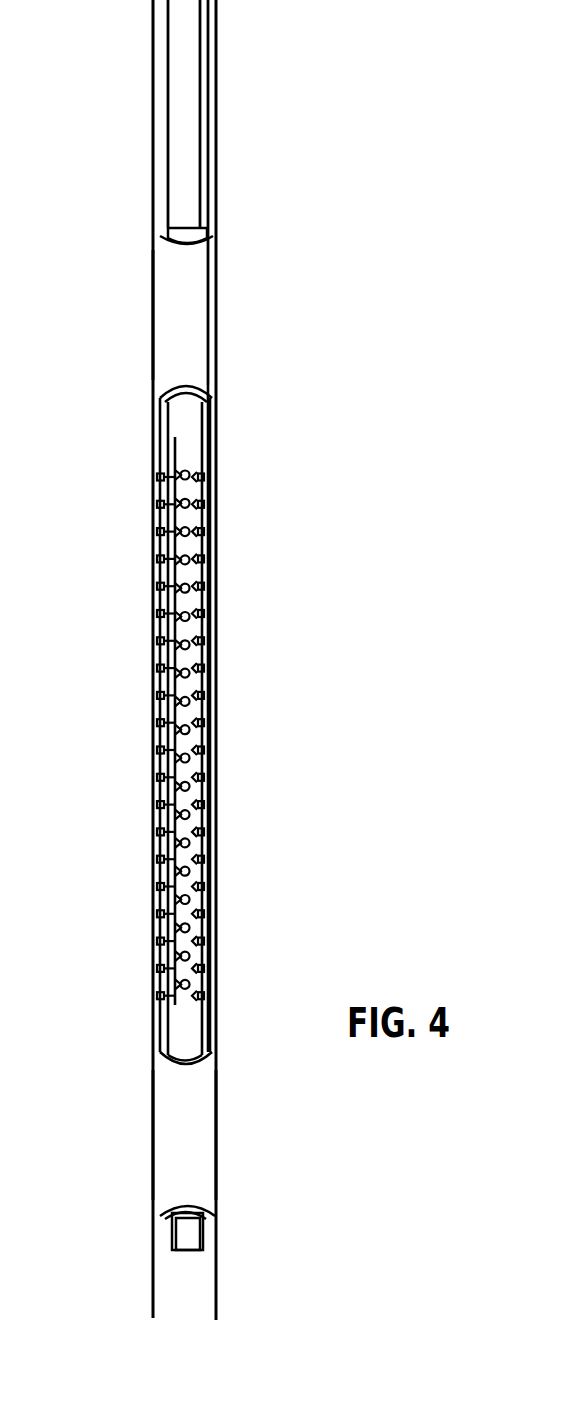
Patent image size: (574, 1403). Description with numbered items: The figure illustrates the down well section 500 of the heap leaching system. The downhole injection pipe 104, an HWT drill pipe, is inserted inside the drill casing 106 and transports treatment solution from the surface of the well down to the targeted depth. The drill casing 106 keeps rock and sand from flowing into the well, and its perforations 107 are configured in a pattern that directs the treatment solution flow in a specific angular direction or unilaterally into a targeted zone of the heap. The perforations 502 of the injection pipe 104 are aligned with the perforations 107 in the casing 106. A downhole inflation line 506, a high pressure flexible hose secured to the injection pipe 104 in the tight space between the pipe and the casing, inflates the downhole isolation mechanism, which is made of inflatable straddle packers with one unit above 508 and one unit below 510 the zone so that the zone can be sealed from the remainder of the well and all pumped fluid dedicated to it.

The down well section 500 is at (400, 509).
The downhole inflation line 506 is at (213, 113).
The downhole injection pipe 104 is at (172, 208).
The upper unit of downhole isolation mechanism 508 is at (162, 350).
The perforations of the injection pipe 502 is at (174, 450).
The perforations 107 is at (157, 723).
The lower unit of downhole isolation mechanism 510 is at (192, 1128).
The drill casing 106 is at (174, 1270).